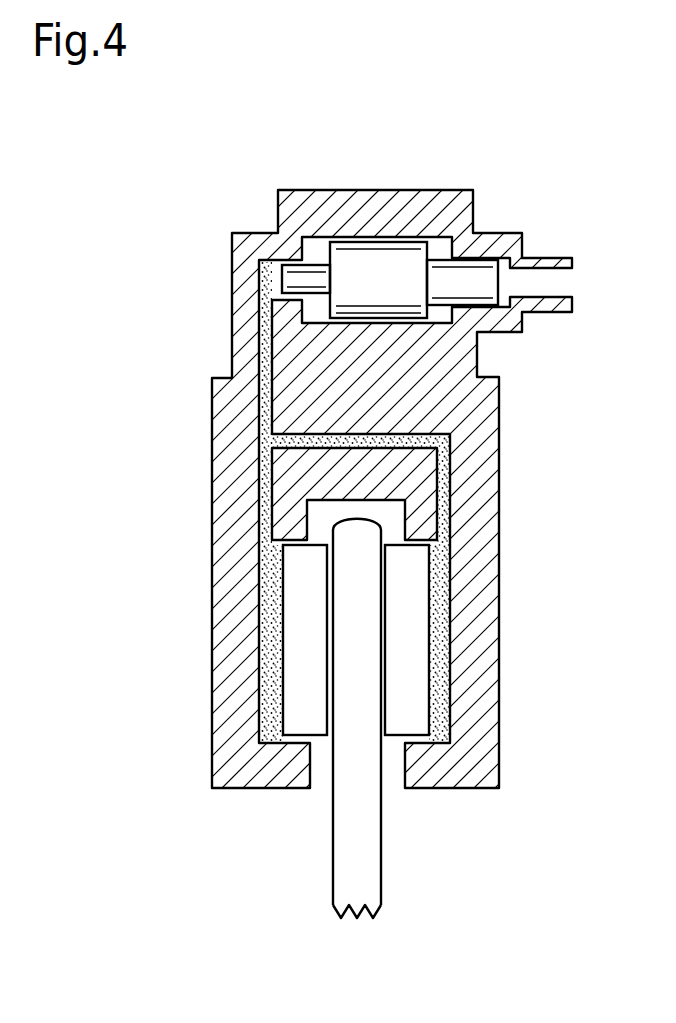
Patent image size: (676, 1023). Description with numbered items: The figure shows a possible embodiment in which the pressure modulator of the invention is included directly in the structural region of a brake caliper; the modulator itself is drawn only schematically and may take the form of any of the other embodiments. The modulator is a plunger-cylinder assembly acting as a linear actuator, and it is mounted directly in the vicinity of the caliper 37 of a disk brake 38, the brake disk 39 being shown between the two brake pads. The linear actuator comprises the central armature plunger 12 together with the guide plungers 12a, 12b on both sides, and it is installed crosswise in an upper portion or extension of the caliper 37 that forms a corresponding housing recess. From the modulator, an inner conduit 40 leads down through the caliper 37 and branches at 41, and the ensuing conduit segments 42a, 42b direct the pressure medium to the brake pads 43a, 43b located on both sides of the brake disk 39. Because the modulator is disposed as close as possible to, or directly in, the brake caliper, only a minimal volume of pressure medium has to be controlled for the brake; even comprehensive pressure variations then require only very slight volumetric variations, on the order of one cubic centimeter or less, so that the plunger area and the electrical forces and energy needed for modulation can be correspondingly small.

The armature plunger 12 is at (372, 275).
The guide plunger 12a is at (312, 277).
The guide plunger 12b is at (450, 278).
The caliper 37 is at (492, 422).
The disk brake 38 is at (232, 797).
The brake disk 39 is at (373, 832).
The inner conduit 40 is at (263, 352).
The branch point 41 is at (272, 440).
The conduit segment 42a is at (268, 651).
The conduit segment 42b is at (448, 675).
The brake pad 43a is at (313, 723).
The brake pad 43b is at (400, 725).